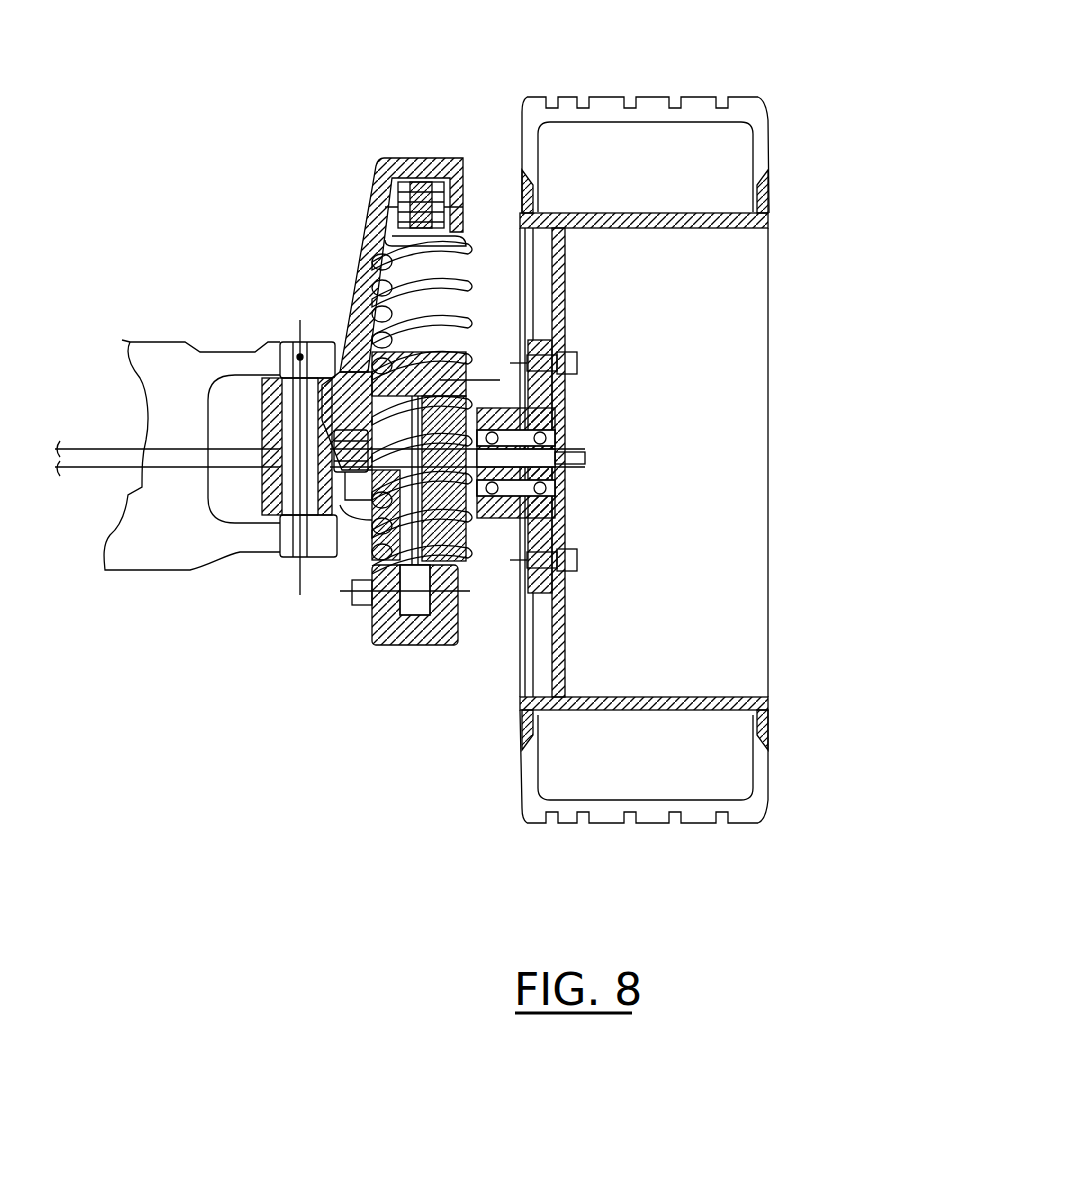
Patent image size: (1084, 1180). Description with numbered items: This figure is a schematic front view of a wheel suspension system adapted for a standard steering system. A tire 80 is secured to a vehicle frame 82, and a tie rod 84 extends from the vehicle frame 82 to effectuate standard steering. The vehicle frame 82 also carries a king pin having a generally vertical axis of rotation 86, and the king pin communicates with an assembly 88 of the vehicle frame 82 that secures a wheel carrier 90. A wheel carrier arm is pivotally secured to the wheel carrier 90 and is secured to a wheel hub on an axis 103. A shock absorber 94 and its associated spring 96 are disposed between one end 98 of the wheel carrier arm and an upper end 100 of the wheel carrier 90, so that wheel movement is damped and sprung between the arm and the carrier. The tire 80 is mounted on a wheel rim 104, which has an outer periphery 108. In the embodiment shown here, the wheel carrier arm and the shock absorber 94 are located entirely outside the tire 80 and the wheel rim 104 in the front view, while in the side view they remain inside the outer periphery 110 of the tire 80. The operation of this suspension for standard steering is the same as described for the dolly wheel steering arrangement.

The tire 80 is at (706, 434).
The vehicle frame 82 is at (125, 345).
The tie rod 84 is at (310, 338).
The axis of rotation 86 is at (300, 582).
The assembly 88 is at (210, 338).
The wheel carrier 90 is at (362, 218).
The shock absorber 94 is at (440, 290).
The spring 96 is at (445, 302).
The end of the wheel carrier arm 98 is at (398, 648).
The upper end of the wheel carrier 100 is at (580, 359).
The axis 103 is at (560, 436).
The wheel rim 104 is at (766, 718).
The outer periphery of the wheel rim 108 is at (655, 693).
The outer periphery of the tire 110 is at (705, 97).